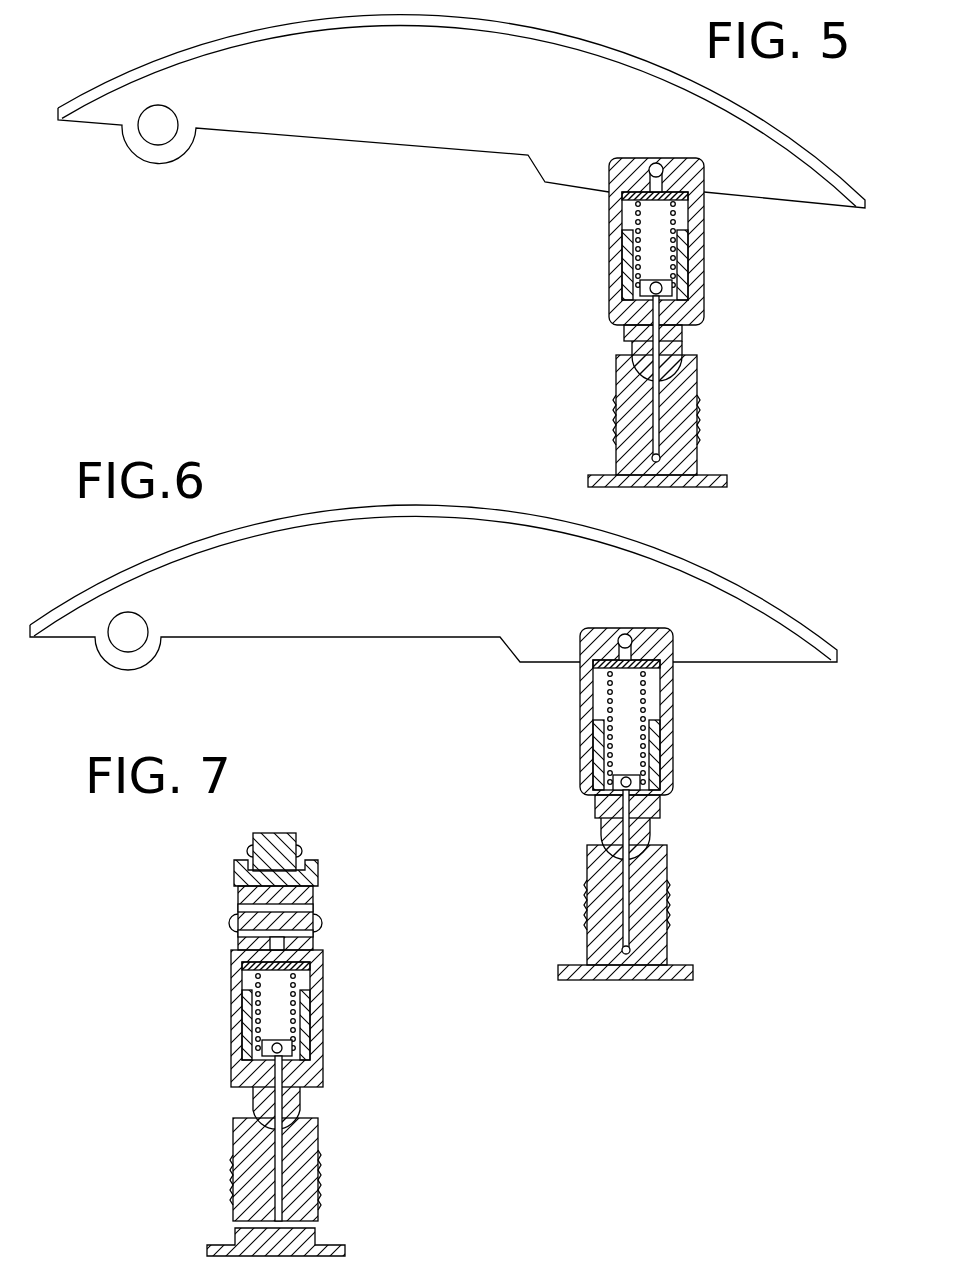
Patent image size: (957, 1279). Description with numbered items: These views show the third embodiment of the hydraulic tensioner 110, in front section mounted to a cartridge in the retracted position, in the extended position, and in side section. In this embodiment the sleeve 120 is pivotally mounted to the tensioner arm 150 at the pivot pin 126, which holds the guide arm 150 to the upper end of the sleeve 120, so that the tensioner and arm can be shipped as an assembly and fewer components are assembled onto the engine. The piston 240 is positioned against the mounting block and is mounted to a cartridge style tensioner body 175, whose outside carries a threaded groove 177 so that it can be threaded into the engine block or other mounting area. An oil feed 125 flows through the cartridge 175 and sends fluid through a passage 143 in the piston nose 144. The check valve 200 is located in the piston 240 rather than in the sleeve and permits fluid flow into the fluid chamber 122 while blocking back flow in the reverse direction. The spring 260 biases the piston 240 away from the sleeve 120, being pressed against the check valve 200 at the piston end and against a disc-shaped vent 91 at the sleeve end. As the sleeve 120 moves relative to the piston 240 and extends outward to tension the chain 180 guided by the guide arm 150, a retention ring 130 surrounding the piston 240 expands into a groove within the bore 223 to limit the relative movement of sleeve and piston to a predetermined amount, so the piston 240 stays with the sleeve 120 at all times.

In FIG. 5, the disc-shaped vent 91 is at (668, 196).
In FIG. 7, the disc-shaped vent 91 is at (314, 958).
In FIG. 5, the tensioner assembly 110 is at (590, 240).
In FIG. 5, the sleeve 120 is at (608, 276).
In FIG. 6, the sleeve 120 is at (590, 708).
In FIG. 7, the sleeve 120 is at (230, 978).
In FIG. 7, the fluid chamber 122 is at (268, 1011).
In FIG. 5, the oil feed 125 is at (660, 398).
In FIG. 6, the oil feed 125 is at (630, 910).
In FIG. 7, the oil feed 125 is at (284, 1120).
In FIG. 6, the pivot pin 126 is at (630, 648).
In FIG. 7, the pivot pin 126 is at (324, 917).
In FIG. 7, the retention ring 130 is at (314, 1030).
In FIG. 5, the passage 143 is at (633, 341).
In FIG. 5, the piston nose 144 is at (674, 348).
In FIG. 7, the piston nose 144 is at (291, 1104).
In FIG. 6, the tensioner arm 150 is at (467, 622).
In FIG. 7, the tensioner arm 150 is at (320, 862).
In FIG. 5, the cartridge style tensioner body 175 is at (638, 422).
In FIG. 7, the cartridge style tensioner body 175 is at (302, 1188).
In FIG. 5, the threaded groove 177 is at (698, 432).
In FIG. 7, the chain 180 is at (298, 830).
In FIG. 5, the check valve 200 is at (676, 302).
In FIG. 7, the check valve 200 is at (298, 1066).
In FIG. 7, the bore 223 is at (306, 975).
In FIG. 5, the piston 240 is at (690, 246).
In FIG. 6, the piston 240 is at (650, 808).
In FIG. 7, the piston 240 is at (254, 1106).
In FIG. 5, the spring 260 is at (630, 203).